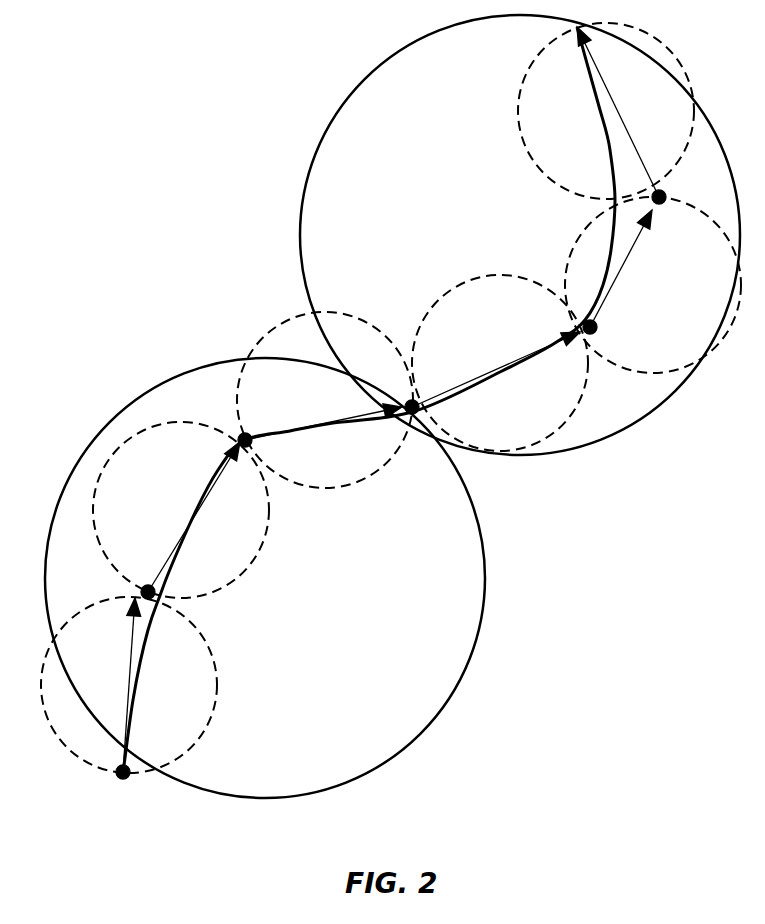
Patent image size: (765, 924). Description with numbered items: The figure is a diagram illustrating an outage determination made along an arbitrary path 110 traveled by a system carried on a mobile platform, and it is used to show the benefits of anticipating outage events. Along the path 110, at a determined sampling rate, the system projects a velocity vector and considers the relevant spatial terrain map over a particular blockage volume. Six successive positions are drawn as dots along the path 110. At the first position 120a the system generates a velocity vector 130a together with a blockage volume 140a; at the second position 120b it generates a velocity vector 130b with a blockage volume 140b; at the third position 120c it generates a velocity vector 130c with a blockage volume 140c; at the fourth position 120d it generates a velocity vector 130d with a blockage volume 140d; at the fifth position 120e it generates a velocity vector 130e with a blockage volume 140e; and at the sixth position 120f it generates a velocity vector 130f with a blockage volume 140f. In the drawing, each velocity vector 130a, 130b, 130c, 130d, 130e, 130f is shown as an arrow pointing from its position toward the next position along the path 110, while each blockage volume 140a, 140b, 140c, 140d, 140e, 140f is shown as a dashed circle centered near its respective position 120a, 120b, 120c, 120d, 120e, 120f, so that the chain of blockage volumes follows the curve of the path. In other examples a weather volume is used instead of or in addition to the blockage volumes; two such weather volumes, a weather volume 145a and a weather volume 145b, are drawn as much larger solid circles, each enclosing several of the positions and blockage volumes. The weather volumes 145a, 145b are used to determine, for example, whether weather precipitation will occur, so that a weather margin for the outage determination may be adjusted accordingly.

The arbitrary path 110 is at (158, 620).
The first position 120a is at (130, 780).
The second position 120b is at (140, 591).
The third position 120c is at (257, 446).
The fourth position 120d is at (403, 400).
The fifth position 120e is at (600, 328).
The sixth position 120f is at (668, 196).
The velocity vector 130a is at (127, 680).
The velocity vector 130b is at (182, 533).
The velocity vector 130c is at (307, 428).
The velocity vector 130d is at (510, 362).
The velocity vector 130e is at (626, 264).
The velocity vector 130f is at (607, 86).
The blockage volume 140a is at (218, 683).
The blockage volume 140b is at (264, 540).
The blockage volume 140c is at (337, 490).
The blockage volume 140d is at (462, 283).
The blockage volume 140e is at (570, 260).
The blockage volume 140f is at (517, 112).
The weather volume 145a is at (97, 440).
The weather volume 145b is at (368, 78).